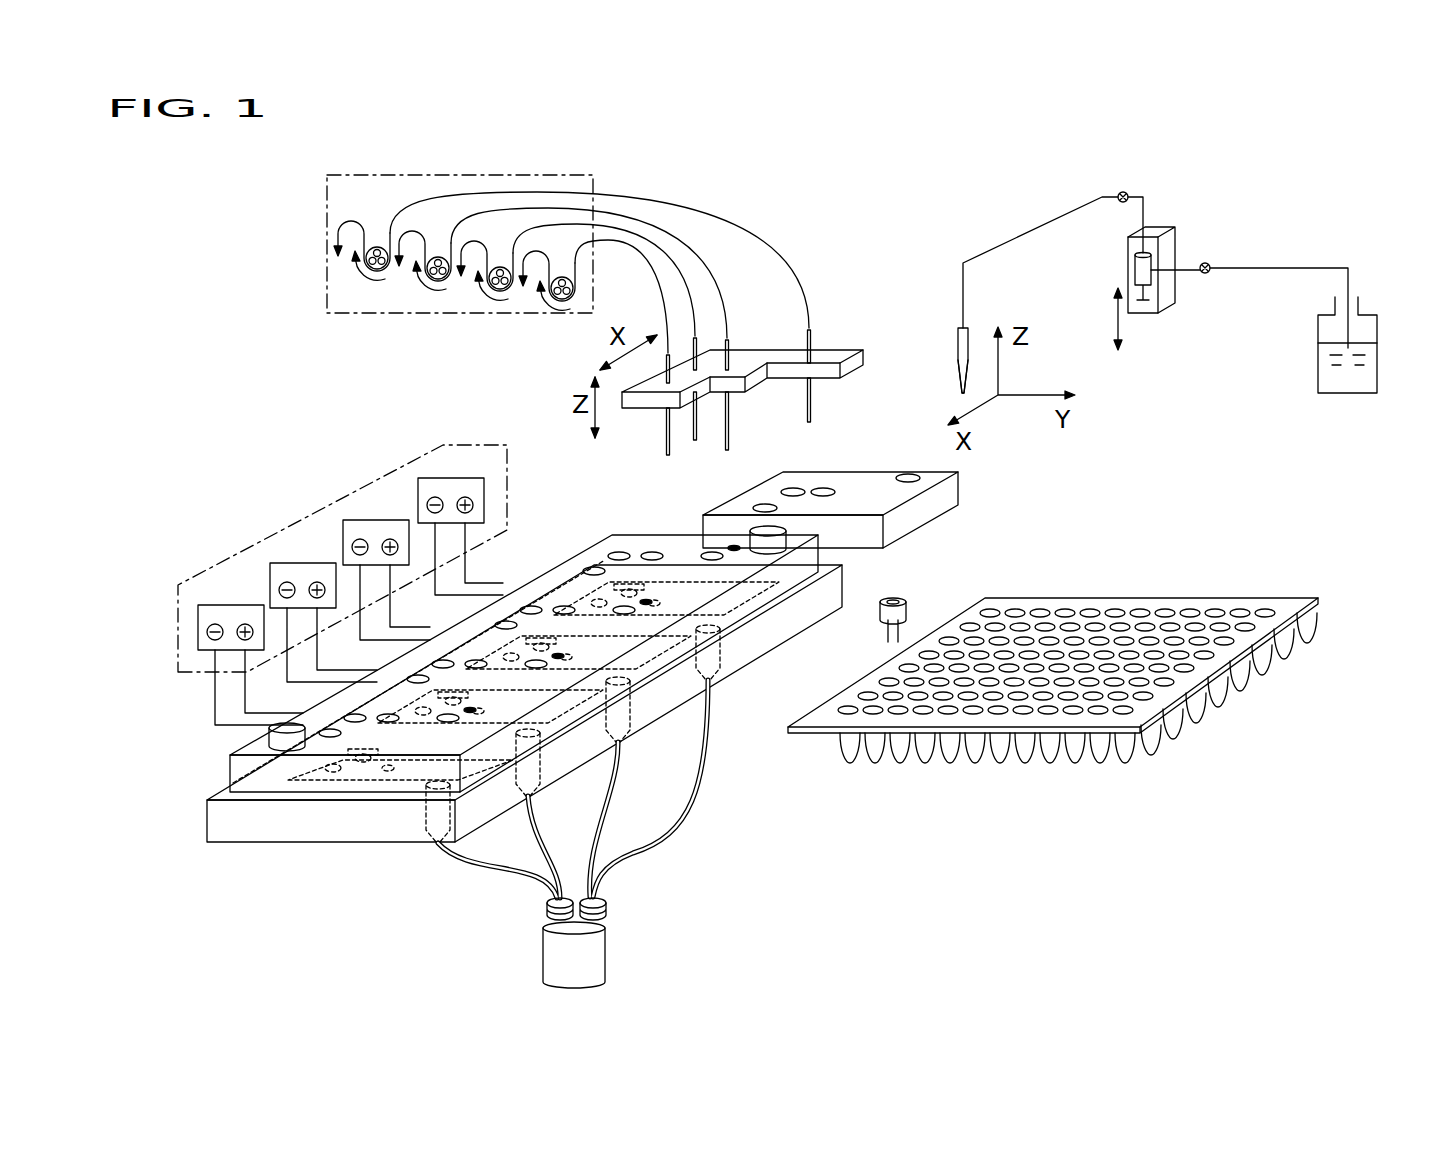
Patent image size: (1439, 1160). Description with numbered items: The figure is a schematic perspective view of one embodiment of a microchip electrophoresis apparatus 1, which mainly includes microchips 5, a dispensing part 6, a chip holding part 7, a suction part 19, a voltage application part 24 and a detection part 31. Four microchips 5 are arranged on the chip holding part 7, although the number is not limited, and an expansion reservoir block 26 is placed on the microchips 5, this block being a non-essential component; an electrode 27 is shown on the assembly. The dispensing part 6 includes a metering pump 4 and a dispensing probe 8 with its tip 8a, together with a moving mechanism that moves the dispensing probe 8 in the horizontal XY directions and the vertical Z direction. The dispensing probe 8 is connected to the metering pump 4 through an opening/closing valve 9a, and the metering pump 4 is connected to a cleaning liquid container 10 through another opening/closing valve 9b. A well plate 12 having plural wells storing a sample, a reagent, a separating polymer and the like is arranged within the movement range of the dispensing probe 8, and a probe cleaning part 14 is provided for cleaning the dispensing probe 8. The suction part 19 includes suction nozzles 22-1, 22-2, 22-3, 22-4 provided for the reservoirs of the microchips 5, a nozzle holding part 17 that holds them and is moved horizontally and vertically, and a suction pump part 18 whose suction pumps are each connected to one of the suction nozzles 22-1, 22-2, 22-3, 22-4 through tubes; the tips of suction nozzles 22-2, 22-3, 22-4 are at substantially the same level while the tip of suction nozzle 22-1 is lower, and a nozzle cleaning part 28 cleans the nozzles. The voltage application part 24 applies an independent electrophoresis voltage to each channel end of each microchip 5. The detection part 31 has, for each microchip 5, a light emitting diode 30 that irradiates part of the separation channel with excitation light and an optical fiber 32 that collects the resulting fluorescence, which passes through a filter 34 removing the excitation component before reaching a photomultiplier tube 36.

The microchip electrophoresis apparatus 1 is at (883, 177).
The metering pump 4 is at (1166, 306).
The microchip 5 is at (350, 787).
The dispensing part 6 is at (1045, 189).
The chip holding part 7 is at (268, 848).
The dispensing probe 8 is at (957, 357).
The nozzle tip 8a is at (958, 377).
The opening/closing valve 9a is at (1124, 190).
The opening/closing valve 9b is at (1207, 262).
The cleaning liquid container 10 is at (1378, 350).
The well plate 12 is at (1198, 593).
The probe cleaning part 14 is at (908, 598).
The nozzle holding part 17 is at (827, 345).
The suction pump part 18 is at (538, 174).
The suction part 19 is at (692, 213).
The suction nozzle 22-1 is at (732, 417).
The suction nozzle 22-2 is at (667, 433).
The suction nozzle 22-3 is at (690, 427).
The suction nozzle 22-4 is at (813, 405).
The voltage application part 24 is at (283, 530).
The expansion reservoir block 26 is at (552, 570).
The electrode 27 is at (777, 540).
The nozzle cleaning part 28 is at (873, 473).
The light emitting diode 30 is at (427, 813).
The detection part 31 is at (447, 918).
The optical fiber 32 is at (703, 850).
The filter 34 is at (547, 907).
The photomultiplier tube 36 is at (543, 962).